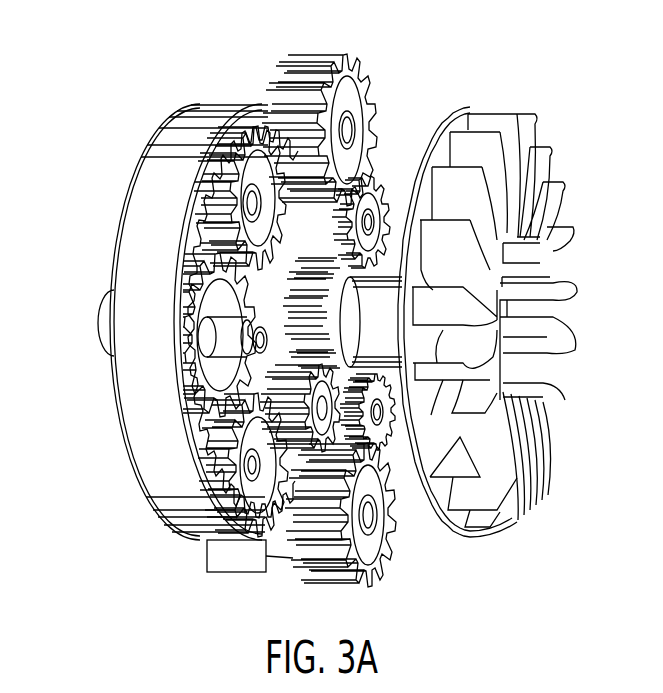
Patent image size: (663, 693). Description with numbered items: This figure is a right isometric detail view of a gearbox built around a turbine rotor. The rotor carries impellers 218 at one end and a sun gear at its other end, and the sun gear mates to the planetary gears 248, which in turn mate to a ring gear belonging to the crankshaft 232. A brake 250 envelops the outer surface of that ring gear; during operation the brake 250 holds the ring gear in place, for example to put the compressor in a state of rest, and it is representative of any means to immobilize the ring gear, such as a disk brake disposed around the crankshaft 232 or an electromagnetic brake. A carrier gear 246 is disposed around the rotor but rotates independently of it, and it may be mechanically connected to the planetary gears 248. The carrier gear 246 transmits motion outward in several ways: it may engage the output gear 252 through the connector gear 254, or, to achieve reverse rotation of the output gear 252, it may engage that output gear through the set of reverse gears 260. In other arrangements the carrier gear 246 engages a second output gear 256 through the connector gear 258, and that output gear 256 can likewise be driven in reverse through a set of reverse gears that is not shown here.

The impellers 218 is at (480, 110).
The crankshaft 232 is at (378, 350).
The carrier gear 246 is at (207, 174).
The planetary gears 248 is at (195, 440).
The brake 250 is at (147, 443).
The output gear 252 is at (388, 560).
The connector gear 254 is at (167, 510).
The output gear 256 is at (270, 80).
The connector gear 258 is at (380, 200).
The set of reverse gears 260 is at (380, 355).